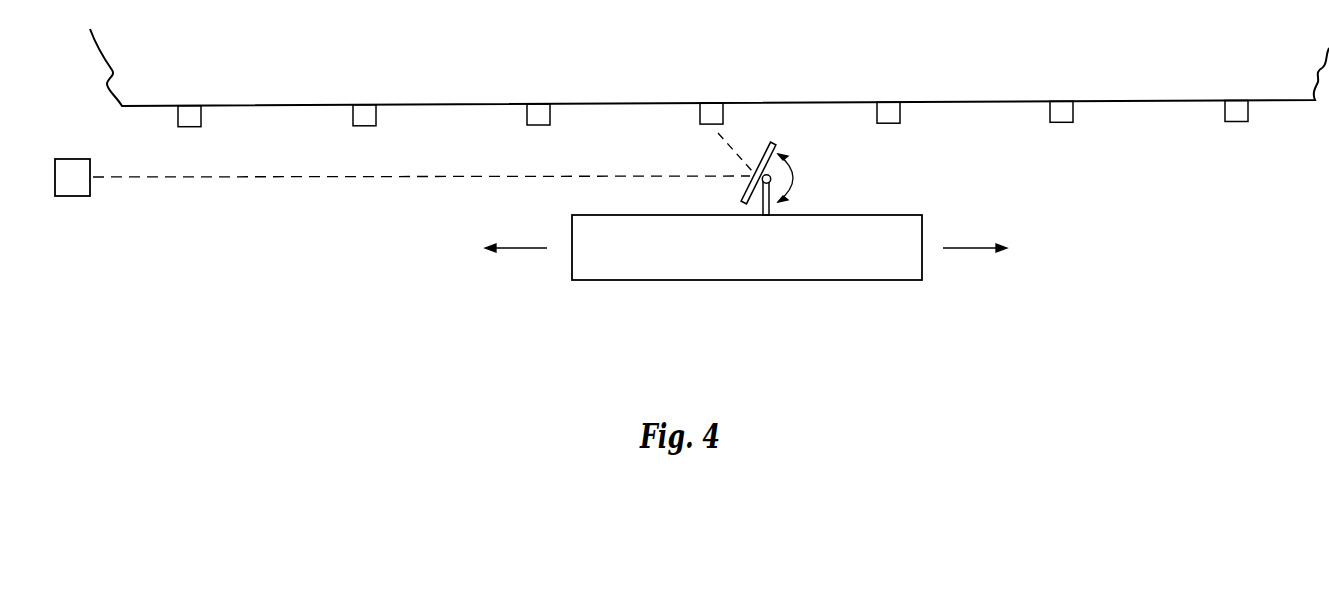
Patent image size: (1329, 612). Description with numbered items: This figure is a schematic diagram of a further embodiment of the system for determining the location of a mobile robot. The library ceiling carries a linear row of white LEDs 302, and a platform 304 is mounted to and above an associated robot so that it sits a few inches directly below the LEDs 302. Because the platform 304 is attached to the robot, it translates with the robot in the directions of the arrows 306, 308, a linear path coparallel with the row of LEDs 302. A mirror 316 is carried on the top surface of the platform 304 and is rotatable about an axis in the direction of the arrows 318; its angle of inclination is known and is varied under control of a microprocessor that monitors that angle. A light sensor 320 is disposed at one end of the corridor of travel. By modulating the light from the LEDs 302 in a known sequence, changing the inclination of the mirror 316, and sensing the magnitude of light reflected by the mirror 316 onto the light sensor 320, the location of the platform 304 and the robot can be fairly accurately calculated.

The white LEDs 302 is at (186, 127).
The platform 304 is at (765, 257).
The arrow 306 is at (513, 248).
The arrow 308 is at (982, 248).
The mirror 316 is at (745, 191).
The arrows 318 is at (795, 173).
The light sensor 320 is at (72, 197).